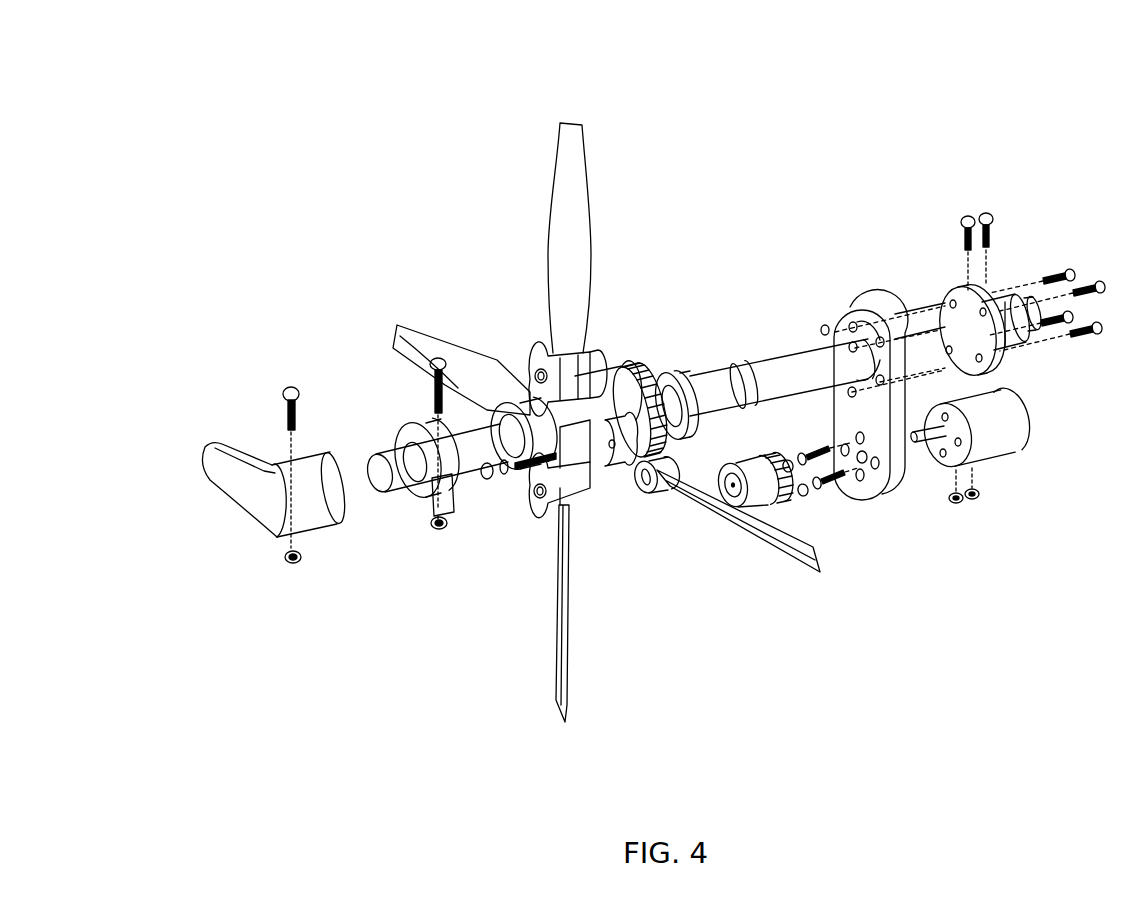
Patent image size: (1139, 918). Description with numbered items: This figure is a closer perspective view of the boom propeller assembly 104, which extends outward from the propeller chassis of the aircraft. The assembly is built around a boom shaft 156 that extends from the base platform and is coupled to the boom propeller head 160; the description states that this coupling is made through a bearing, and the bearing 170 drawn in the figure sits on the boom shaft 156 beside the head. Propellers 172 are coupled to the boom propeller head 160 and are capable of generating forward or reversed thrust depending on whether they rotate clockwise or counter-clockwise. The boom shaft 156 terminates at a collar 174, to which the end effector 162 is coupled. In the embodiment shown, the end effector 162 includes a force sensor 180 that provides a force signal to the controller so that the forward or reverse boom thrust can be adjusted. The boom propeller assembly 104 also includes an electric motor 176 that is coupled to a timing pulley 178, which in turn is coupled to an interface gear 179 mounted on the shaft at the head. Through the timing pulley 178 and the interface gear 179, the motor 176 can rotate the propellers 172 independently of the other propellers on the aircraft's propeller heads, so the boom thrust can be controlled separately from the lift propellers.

The boom propeller assembly 104 is at (240, 116).
The boom shaft 156 is at (777, 347).
The boom propeller head 160 is at (633, 490).
The end effector 162 is at (332, 546).
The bearing 170 is at (667, 360).
The propellers 172 is at (573, 120).
The collar 174 is at (410, 423).
The electric motor 176 is at (1003, 455).
The timing pulley 178 is at (780, 500).
The interface gear 179 is at (620, 363).
The force sensor 180 is at (233, 445).